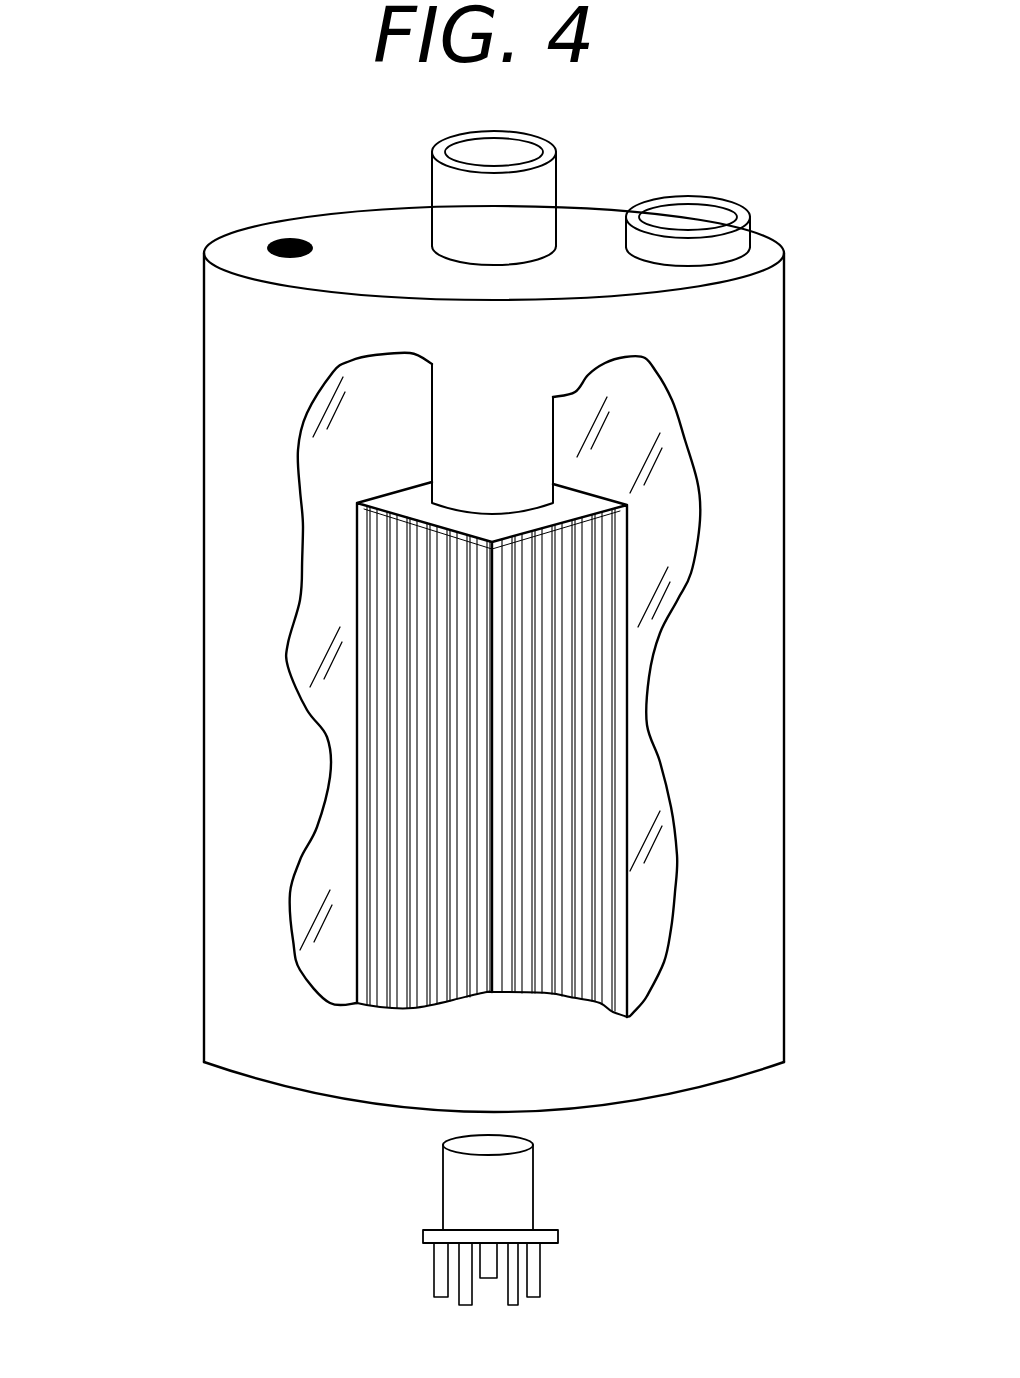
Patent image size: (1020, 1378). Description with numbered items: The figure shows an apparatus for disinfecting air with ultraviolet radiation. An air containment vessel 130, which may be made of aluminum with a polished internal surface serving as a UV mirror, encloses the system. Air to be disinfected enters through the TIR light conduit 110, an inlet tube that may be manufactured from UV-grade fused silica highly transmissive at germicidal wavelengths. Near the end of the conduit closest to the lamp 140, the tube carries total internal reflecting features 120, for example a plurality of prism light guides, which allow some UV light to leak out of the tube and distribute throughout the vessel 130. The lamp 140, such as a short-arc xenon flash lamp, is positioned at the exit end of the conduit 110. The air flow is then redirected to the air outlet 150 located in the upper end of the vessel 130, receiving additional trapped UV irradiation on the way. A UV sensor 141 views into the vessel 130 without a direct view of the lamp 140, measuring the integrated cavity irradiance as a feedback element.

The TIR light conduit 110 is at (432, 180).
The total internal reflecting features 120 is at (383, 823).
The air containment vessel 130 is at (204, 633).
The lamp 140 is at (443, 1182).
The UV sensor 141 is at (277, 240).
The air outlet 150 is at (750, 218).